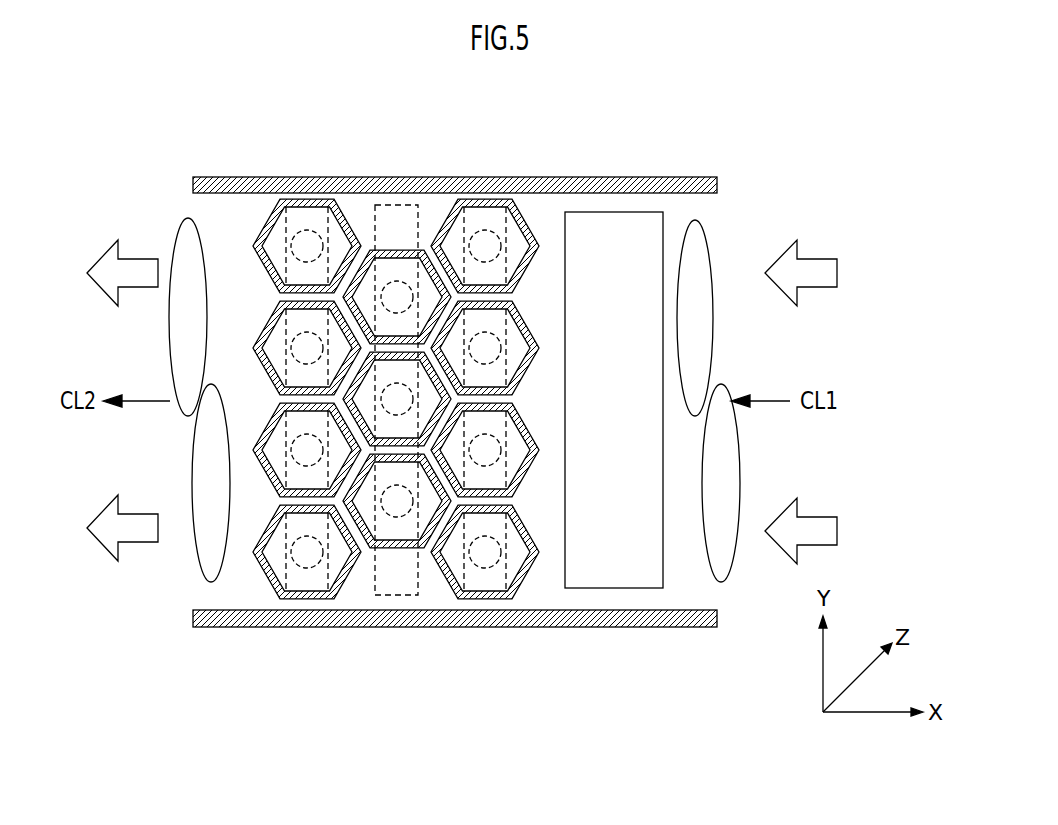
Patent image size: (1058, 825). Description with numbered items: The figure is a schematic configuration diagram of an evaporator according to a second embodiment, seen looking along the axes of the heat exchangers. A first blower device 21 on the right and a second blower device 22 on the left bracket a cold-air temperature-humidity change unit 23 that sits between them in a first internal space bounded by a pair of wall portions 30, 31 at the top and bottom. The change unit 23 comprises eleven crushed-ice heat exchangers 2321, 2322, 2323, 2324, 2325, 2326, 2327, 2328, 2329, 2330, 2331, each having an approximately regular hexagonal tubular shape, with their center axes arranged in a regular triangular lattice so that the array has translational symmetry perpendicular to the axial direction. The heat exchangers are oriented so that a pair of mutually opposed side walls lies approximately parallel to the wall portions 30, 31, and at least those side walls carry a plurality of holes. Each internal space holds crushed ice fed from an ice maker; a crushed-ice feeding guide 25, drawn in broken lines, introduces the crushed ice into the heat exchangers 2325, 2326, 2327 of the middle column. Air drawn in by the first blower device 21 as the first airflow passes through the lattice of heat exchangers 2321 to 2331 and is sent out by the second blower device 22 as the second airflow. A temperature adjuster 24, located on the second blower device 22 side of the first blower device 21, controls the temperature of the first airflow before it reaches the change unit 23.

The first blower device 21 is at (722, 579).
The second blower device 22 is at (200, 555).
The cold-air temperature-humidity change unit 23 is at (356, 196).
The temperature adjuster 24 is at (648, 590).
The crushed-ice feeding guide 25 is at (408, 196).
The wall portion 30 is at (705, 177).
The wall portion 31 is at (697, 628).
The crushed-ice heat exchanger 2321 is at (308, 218).
The crushed-ice heat exchanger 2322 is at (272, 325).
The crushed-ice heat exchanger 2323 is at (272, 447).
The crushed-ice heat exchanger 2324 is at (305, 585).
The crushed-ice heat exchanger 2325 is at (400, 277).
The crushed-ice heat exchanger 2326 is at (427, 378).
The crushed-ice heat exchanger 2327 is at (397, 535).
The crushed-ice heat exchanger 2328 is at (517, 240).
The crushed-ice heat exchanger 2329 is at (517, 333).
The crushed-ice heat exchanger 2330 is at (525, 460).
The crushed-ice heat exchanger 2331 is at (487, 585).